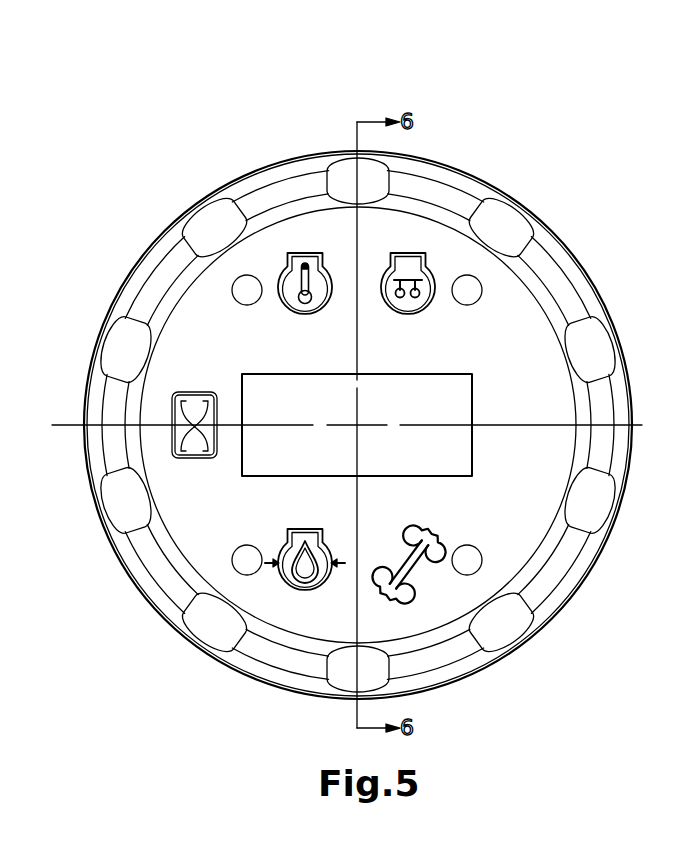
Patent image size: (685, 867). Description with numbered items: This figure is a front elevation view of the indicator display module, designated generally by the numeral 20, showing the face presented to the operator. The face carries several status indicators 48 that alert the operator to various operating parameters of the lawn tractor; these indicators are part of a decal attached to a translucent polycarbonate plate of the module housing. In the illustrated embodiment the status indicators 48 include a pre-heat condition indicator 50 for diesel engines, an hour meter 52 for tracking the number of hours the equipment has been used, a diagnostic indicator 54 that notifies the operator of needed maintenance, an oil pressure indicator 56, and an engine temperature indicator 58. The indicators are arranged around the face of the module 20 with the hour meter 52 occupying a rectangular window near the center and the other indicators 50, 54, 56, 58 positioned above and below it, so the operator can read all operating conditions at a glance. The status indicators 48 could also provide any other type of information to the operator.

The fluid dispensing device 20 is at (320, 108).
The status indicators 48 is at (470, 146).
The pre-heat condition indicator 50 is at (428, 266).
The hour meter 52 is at (472, 388).
The diagnostic indicator 54 is at (411, 582).
The oil pressure indicator 56 is at (291, 582).
The engine temperature indicator 58 is at (287, 264).